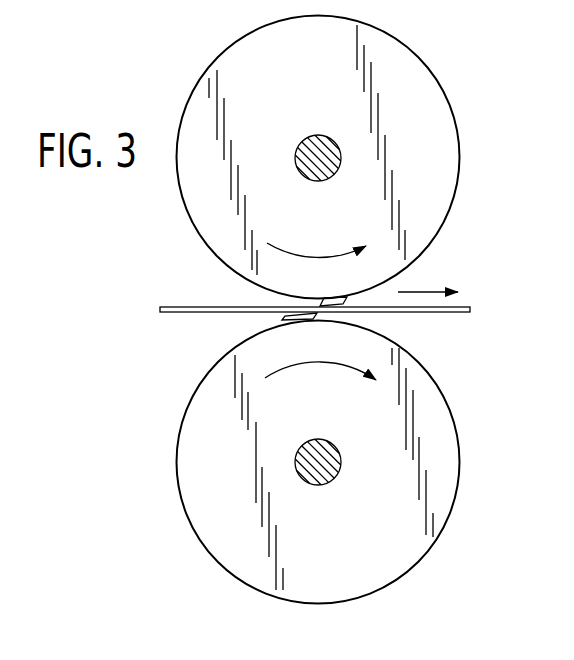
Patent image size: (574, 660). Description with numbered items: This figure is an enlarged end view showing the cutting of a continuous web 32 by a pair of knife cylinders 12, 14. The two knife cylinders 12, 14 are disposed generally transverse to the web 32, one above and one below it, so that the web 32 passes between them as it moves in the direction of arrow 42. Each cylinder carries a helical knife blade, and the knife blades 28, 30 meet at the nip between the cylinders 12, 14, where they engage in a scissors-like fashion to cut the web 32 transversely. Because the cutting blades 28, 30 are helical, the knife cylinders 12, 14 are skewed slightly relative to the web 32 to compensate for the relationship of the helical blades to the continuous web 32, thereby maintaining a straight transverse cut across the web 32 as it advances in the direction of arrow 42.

The knife cylinder 12 is at (400, 69).
The knife cylinder 14 is at (382, 567).
The knife blade 28 is at (348, 297).
The knife blade 30 is at (297, 315).
The web 32 is at (175, 307).
The arrow 42 is at (424, 292).